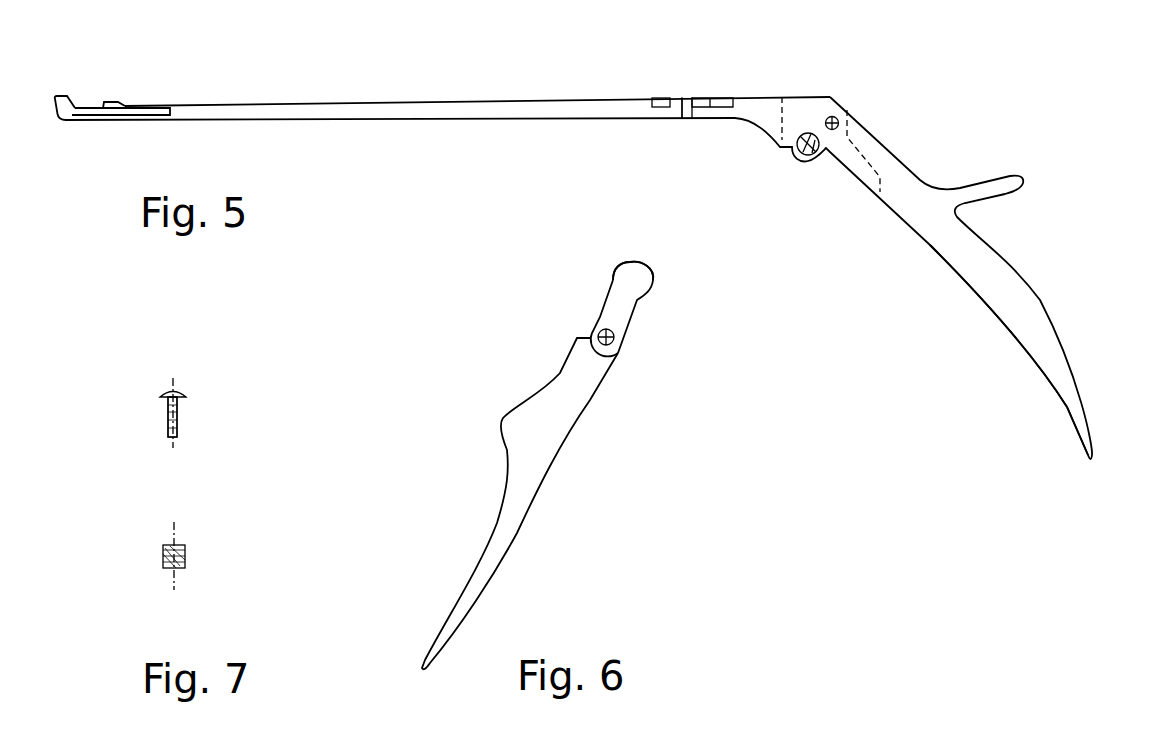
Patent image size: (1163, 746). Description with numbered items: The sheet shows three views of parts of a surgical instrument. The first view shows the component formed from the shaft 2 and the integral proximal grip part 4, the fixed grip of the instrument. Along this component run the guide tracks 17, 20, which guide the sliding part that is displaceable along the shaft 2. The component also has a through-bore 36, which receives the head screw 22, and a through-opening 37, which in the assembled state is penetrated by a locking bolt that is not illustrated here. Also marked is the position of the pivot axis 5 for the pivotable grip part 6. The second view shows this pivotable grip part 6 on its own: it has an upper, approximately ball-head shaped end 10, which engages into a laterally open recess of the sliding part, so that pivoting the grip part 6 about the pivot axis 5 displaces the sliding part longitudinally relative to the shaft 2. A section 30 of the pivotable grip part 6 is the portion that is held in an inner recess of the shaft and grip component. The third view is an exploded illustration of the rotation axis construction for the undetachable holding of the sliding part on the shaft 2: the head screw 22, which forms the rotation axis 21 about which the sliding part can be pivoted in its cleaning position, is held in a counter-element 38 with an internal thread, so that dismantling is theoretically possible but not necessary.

In FIG. 5, the shaft 2 is at (392, 108).
In FIG. 5, the proximal grip part 4 is at (1035, 313).
In FIG. 5, the pivot axis 5 is at (810, 157).
In FIG. 6, the pivot axis 5 is at (617, 353).
In FIG. 6, the pivotable grip part 6 is at (507, 533).
In FIG. 6, the ball-head shaped end 10 is at (627, 273).
In FIG. 5, the guide track 17 is at (103, 106).
In FIG. 5, the guide track 20 is at (660, 100).
In FIG. 7, the rotation axis 21 is at (175, 392).
In FIG. 7, the head screw 22 is at (177, 417).
In FIG. 6, the section of the pivotable grip part 30 is at (618, 307).
In FIG. 5, the through-bore 36 is at (680, 107).
In FIG. 5, the through-opening 37 is at (833, 120).
In FIG. 7, the counter-element 38 is at (187, 550).